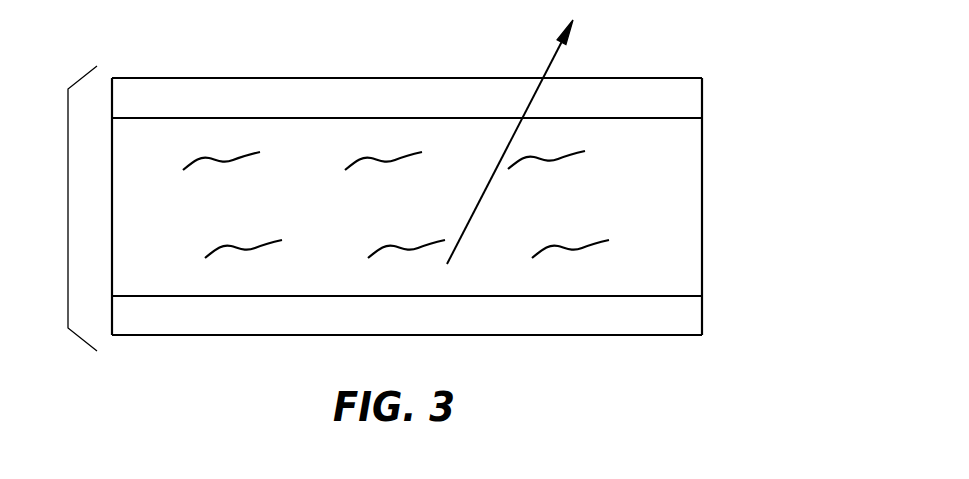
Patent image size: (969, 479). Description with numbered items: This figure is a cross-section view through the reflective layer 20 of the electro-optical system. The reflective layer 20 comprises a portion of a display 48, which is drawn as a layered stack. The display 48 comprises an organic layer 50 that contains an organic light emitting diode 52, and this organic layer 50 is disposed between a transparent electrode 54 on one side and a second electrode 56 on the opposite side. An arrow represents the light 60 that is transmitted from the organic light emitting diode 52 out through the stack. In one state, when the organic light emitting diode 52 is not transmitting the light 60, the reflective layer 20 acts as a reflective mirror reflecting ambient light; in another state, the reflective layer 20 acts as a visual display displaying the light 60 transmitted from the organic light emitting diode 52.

The reflective layer 20 is at (458, 201).
The display 48 is at (68, 207).
The organic layer 50 is at (665, 193).
The organic light emitting diode 52 is at (246, 245).
The transparent electrode 54 is at (680, 92).
The second electrode 56 is at (682, 320).
The light 60 is at (546, 62).